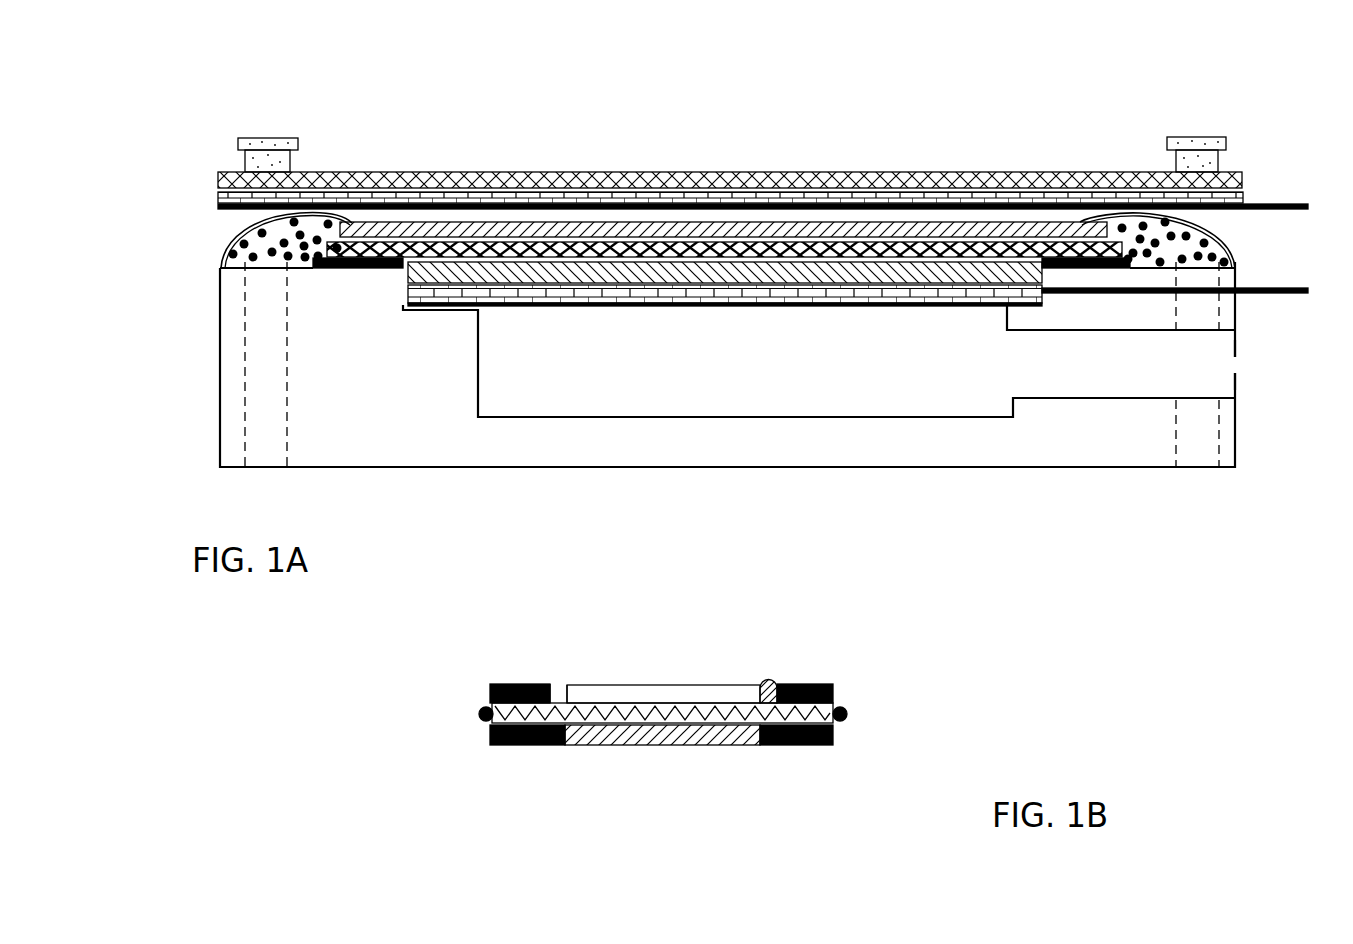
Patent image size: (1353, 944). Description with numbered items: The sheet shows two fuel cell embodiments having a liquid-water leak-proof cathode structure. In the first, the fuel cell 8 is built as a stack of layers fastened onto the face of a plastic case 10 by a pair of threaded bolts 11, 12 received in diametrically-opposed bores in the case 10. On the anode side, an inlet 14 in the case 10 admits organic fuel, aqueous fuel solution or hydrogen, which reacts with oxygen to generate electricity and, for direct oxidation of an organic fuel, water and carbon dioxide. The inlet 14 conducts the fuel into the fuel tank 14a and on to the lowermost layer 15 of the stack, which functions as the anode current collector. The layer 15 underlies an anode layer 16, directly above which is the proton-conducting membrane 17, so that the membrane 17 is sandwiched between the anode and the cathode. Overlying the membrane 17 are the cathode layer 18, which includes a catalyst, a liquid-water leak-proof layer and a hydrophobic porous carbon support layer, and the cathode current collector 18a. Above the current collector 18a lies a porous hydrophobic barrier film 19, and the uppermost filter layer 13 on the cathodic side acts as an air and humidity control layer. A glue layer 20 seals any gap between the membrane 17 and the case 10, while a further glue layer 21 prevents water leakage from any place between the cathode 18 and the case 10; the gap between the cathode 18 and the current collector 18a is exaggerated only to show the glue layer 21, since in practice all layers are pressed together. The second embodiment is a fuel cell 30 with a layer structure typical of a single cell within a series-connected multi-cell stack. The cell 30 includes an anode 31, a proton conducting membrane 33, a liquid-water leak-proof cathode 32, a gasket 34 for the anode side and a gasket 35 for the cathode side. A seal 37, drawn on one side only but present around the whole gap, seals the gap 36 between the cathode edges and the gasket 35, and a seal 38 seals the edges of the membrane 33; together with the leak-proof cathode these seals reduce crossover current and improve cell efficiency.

In FIG. 1A, the fuel cell 8 is at (447, 118).
In FIG. 1A, the plastic case 10 is at (219, 380).
In FIG. 1A, the threaded bolt 11 is at (268, 138).
In FIG. 1A, the threaded bolt 12 is at (1197, 137).
In FIG. 1A, the filter layer 13 is at (738, 172).
In FIG. 1A, the inlet 14 is at (1253, 368).
In FIG. 1A, the fuel tank 14a is at (753, 377).
In FIG. 1A, the anode current-collector layer 15 is at (650, 300).
In FIG. 1A, the anode layer 16 is at (882, 290).
In FIG. 1A, the proton-conducting membrane 17 is at (542, 248).
In FIG. 1A, the cathode layer 18 is at (912, 225).
In FIG. 1A, the cathode current collector 18a is at (227, 208).
In FIG. 1A, the porous hydrophobic barrier film 19 is at (512, 200).
In FIG. 1A, the glue layer 20 is at (352, 270).
In FIG. 1A, the glue layer 21 is at (228, 254).
In FIG. 1B, the fuel cell 30 is at (664, 652).
In FIG. 1B, the anode 31 is at (605, 735).
In FIG. 1B, the liquid-water leak-proof cathode 32 is at (633, 693).
In FIG. 1B, the proton conducting membrane 33 is at (685, 716).
In FIG. 1B, the anode-side gasket 34 is at (517, 745).
In FIG. 1B, the cathode-side gasket 35 is at (500, 684).
In FIG. 1B, the gap 36 is at (560, 690).
In FIG. 1B, the seal 37 is at (768, 680).
In FIG. 1B, the seal 38 is at (480, 712).